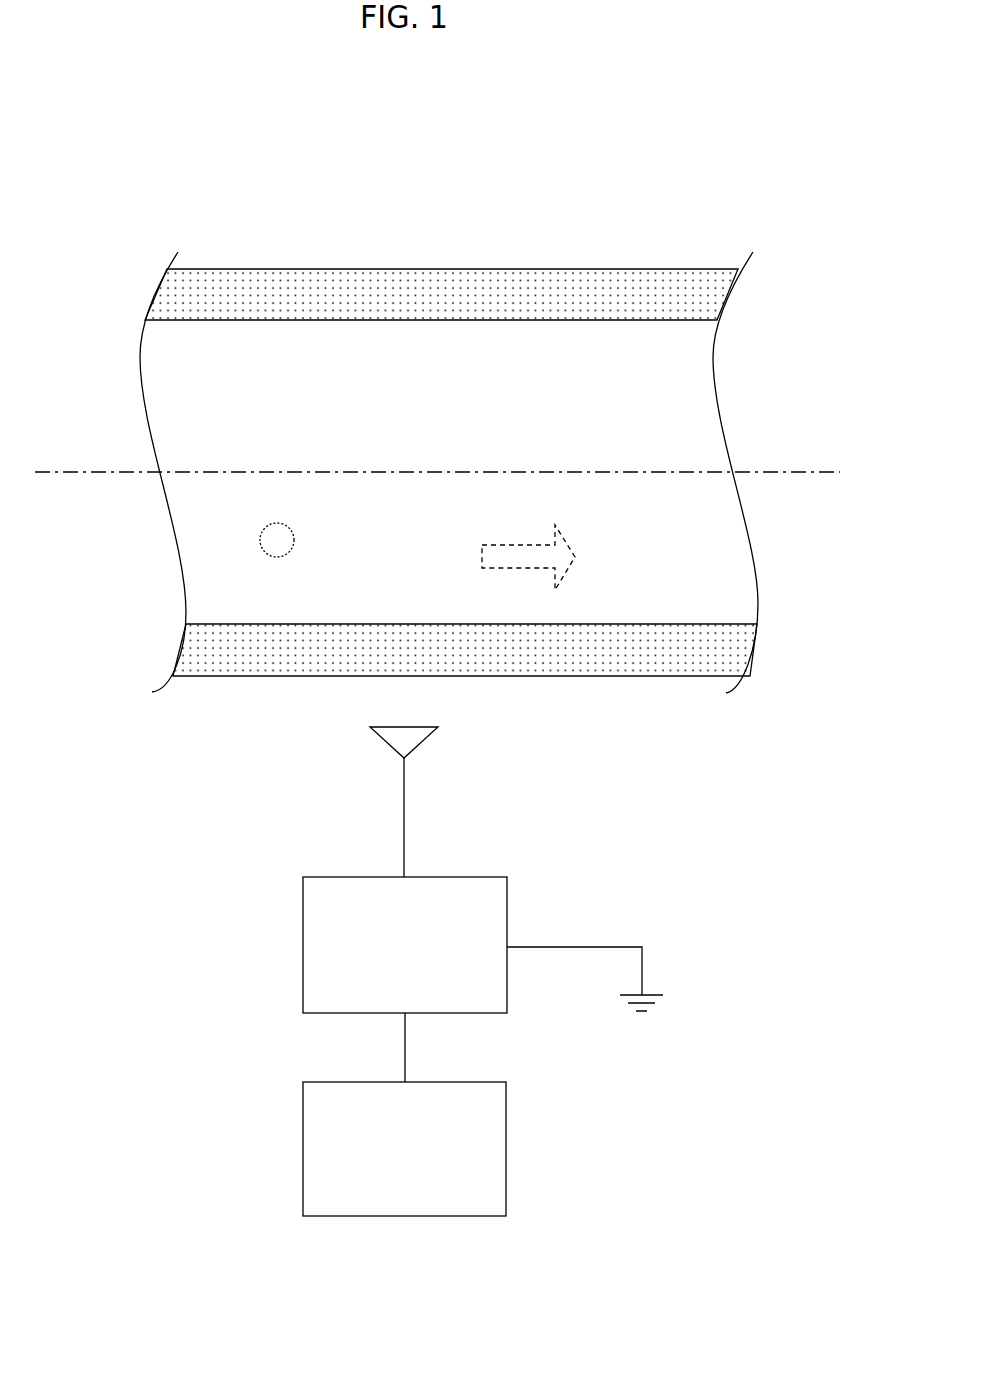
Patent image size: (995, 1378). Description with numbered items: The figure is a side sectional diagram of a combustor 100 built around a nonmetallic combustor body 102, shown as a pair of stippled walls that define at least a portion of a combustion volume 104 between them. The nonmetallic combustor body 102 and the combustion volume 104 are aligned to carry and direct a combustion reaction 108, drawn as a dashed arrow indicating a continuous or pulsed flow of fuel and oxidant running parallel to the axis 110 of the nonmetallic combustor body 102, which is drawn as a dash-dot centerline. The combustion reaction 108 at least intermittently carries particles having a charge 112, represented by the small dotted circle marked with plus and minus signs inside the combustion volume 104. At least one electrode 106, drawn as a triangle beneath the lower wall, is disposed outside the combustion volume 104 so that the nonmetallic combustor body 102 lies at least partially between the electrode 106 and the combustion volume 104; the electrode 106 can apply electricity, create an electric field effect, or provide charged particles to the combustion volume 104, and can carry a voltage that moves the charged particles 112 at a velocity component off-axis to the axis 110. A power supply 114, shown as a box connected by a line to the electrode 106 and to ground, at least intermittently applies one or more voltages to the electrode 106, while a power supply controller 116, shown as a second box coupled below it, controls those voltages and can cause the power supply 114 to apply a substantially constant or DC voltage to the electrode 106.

The combustor 100 is at (546, 178).
The nonmetallic combustor body 102 is at (266, 269).
The combustion volume 104 is at (456, 387).
The electrode 106 is at (438, 727).
The combustion reaction 108 is at (513, 540).
The axis 110 is at (682, 476).
The charged particles 112 is at (278, 557).
The power supply 114 is at (387, 984).
The power supply controller 116 is at (387, 1199).